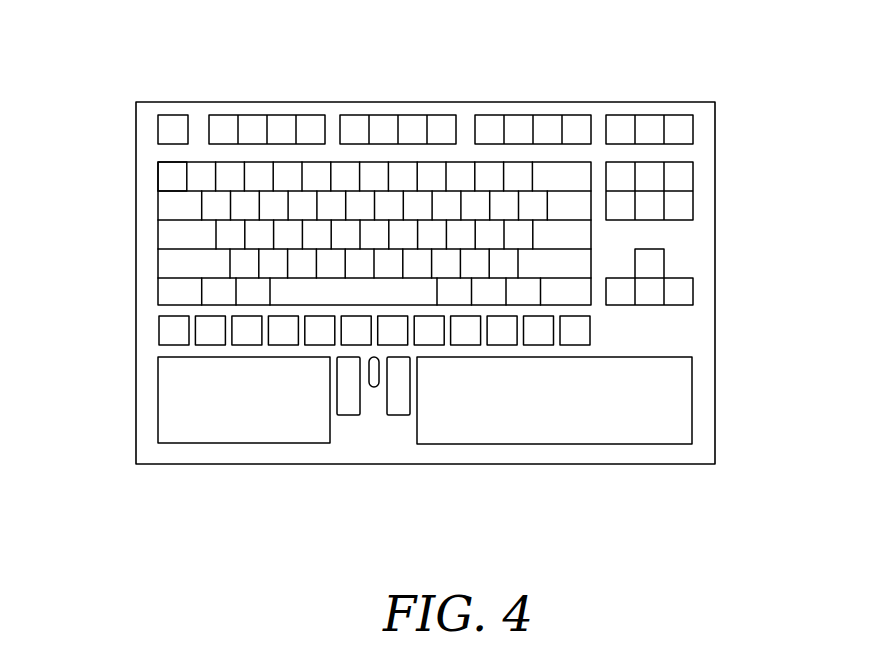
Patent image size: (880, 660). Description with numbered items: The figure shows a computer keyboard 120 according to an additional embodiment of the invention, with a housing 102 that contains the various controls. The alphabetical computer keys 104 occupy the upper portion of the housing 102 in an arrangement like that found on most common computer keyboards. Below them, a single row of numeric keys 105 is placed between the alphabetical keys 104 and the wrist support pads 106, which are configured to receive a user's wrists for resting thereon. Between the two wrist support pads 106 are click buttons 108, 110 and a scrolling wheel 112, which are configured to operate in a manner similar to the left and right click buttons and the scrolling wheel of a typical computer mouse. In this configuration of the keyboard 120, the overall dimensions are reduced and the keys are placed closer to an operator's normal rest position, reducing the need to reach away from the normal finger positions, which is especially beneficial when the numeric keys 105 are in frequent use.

The housing 102 is at (199, 116).
The computer keys 104 is at (168, 175).
The numeric keys 105 is at (212, 335).
The wrist support pads 106 is at (235, 402).
The click button 108 is at (352, 397).
The click button 110 is at (399, 395).
The scrolling wheel 112 is at (375, 388).
The computer keyboard 120 is at (698, 64).